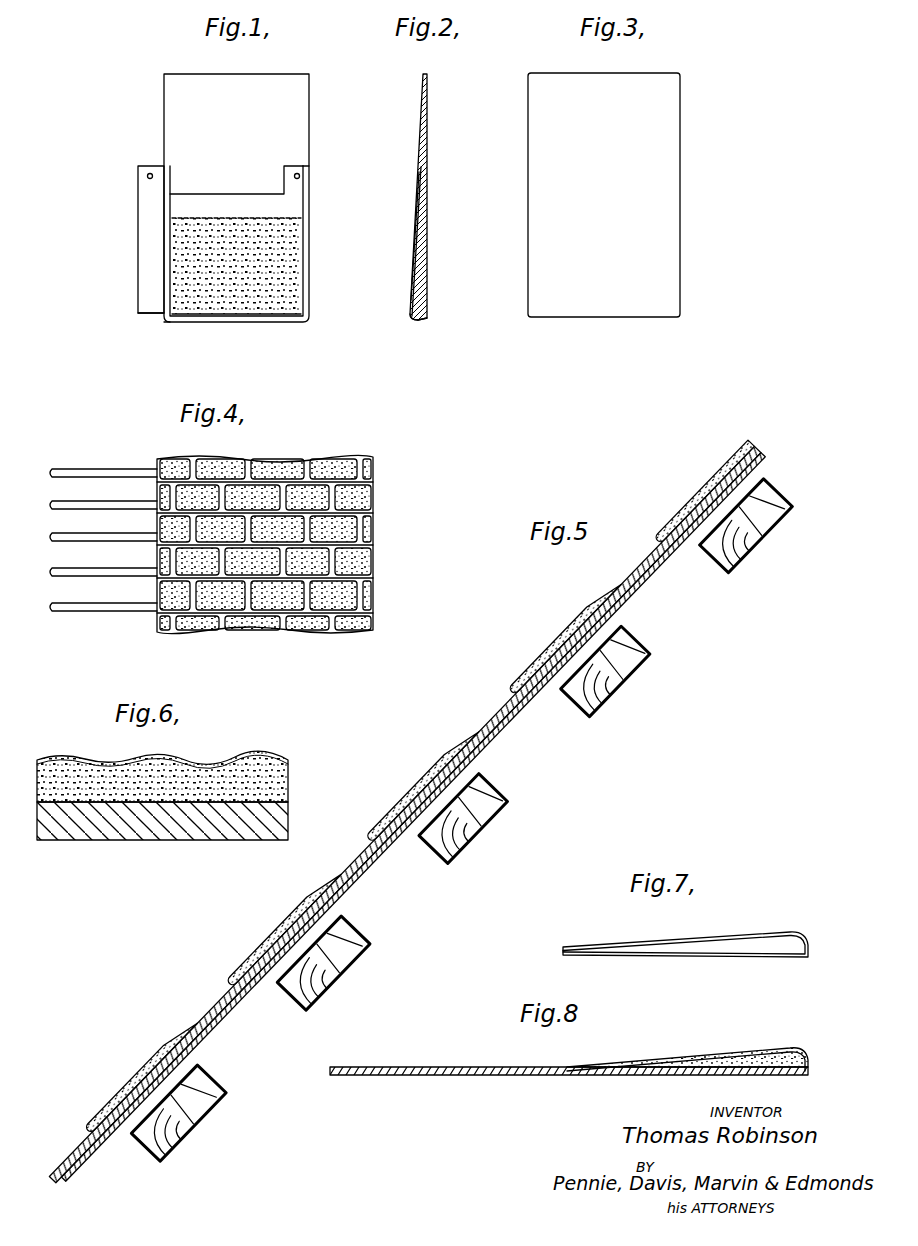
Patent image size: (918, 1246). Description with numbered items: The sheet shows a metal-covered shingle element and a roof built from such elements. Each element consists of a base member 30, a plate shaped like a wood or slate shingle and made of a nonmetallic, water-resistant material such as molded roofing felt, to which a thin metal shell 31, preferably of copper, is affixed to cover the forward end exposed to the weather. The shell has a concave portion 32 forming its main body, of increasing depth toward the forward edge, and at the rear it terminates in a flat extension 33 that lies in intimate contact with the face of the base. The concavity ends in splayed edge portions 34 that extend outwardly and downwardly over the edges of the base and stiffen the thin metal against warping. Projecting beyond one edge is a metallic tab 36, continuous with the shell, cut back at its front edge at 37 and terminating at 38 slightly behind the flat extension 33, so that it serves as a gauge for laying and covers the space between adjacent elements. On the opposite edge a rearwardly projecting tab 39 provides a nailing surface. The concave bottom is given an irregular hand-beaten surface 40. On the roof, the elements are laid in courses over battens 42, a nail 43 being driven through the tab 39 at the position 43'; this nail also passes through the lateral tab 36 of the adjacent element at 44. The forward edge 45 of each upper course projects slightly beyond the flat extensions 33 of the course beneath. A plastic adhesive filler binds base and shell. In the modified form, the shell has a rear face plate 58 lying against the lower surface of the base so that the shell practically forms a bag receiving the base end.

In FIG. 1, the base member 30 is at (294, 127).
In FIG. 2, the base member 30 is at (428, 140).
In FIG. 3, the base member 30 is at (667, 120).
In FIG. 6, the base member 30 is at (170, 823).
In FIG. 1, the metal shell 31 is at (297, 262).
In FIG. 2, the metal shell 31 is at (407, 262).
In FIG. 1, the concave portion 32 is at (275, 297).
In FIG. 2, the concave portion 32 is at (415, 296).
In FIG. 1, the flat extension 33 is at (207, 200).
In FIG. 2, the flat extension 33 is at (418, 203).
In FIG. 5, the flat extension 33 is at (398, 838).
In FIG. 2, the splayed edge portions 34 is at (417, 318).
In FIG. 1, the metallic tab 36 is at (148, 290).
In FIG. 1, the cut back front edge 37 is at (153, 315).
In FIG. 1, the rear end of tab 38 is at (143, 165).
In FIG. 1, the rearwardly projecting tab 39 is at (295, 167).
In FIG. 6, the irregular surface 40 is at (208, 758).
In FIG. 4, the battens 42 is at (97, 507).
In FIG. 5, the battens 42 is at (473, 833).
In FIG. 5, the nail 43 is at (413, 817).
In FIG. 1, the nail position 43' is at (331, 184).
In FIG. 1, the nail passage through adjacent tab 44 is at (148, 180).
In FIG. 5, the forward edge of upper course 45 is at (372, 840).
In FIG. 7, the rear face plate 58 is at (685, 958).
In FIG. 8, the rear face plate 58 is at (615, 1075).